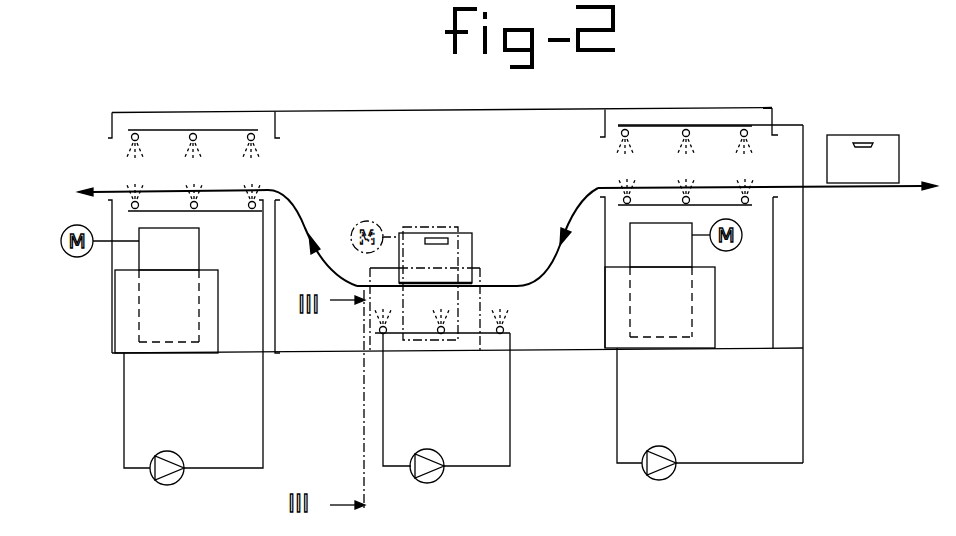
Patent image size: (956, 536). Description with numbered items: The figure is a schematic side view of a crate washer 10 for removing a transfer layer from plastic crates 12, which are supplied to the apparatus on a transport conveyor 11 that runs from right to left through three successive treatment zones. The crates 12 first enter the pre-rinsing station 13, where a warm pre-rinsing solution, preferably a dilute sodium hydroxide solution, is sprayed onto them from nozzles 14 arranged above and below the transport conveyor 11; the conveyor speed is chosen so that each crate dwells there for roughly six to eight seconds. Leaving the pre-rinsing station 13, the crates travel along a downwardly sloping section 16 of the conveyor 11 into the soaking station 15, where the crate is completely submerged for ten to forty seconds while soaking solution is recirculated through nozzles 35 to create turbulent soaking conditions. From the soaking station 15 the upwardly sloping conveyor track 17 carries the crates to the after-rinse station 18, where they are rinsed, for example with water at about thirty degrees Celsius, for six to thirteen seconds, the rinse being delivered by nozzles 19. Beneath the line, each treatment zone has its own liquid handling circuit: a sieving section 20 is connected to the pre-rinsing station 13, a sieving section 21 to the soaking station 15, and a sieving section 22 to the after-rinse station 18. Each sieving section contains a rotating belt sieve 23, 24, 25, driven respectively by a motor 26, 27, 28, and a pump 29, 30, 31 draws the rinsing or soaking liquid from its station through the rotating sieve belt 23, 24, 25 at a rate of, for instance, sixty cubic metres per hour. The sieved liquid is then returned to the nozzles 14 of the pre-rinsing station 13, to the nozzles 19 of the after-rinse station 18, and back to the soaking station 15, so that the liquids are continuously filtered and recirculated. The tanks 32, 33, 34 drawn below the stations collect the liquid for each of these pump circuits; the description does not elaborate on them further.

The crate washer 10 is at (752, 98).
The transport conveyor 11 is at (895, 188).
The crate 12 is at (859, 140).
The pre-rinsing station 13 is at (746, 306).
The nozzles 14 is at (662, 126).
The soaking station 15 is at (350, 125).
The downwardly sloping section 16 is at (556, 248).
The upwardly sloping conveyor track 17 is at (305, 222).
The after-rinse station 18 is at (241, 353).
The nozzles 19 is at (213, 130).
The sieving section 20 is at (702, 347).
The sieving section 21 is at (482, 268).
The sieving section 22 is at (128, 281).
The rotating belt sieve 23 is at (645, 243).
The rotating belt sieve 24 is at (443, 227).
The rotating belt sieve 25 is at (195, 246).
The motor 26 is at (745, 242).
The motor 27 is at (370, 222).
The motor 28 is at (62, 238).
The pump 29 is at (667, 478).
The pump 30 is at (431, 483).
The pump 31 is at (166, 485).
The liquid tank 32 is at (805, 438).
The liquid tank 33 is at (475, 468).
The liquid tank 34 is at (238, 470).
The nozzles 35 is at (505, 330).